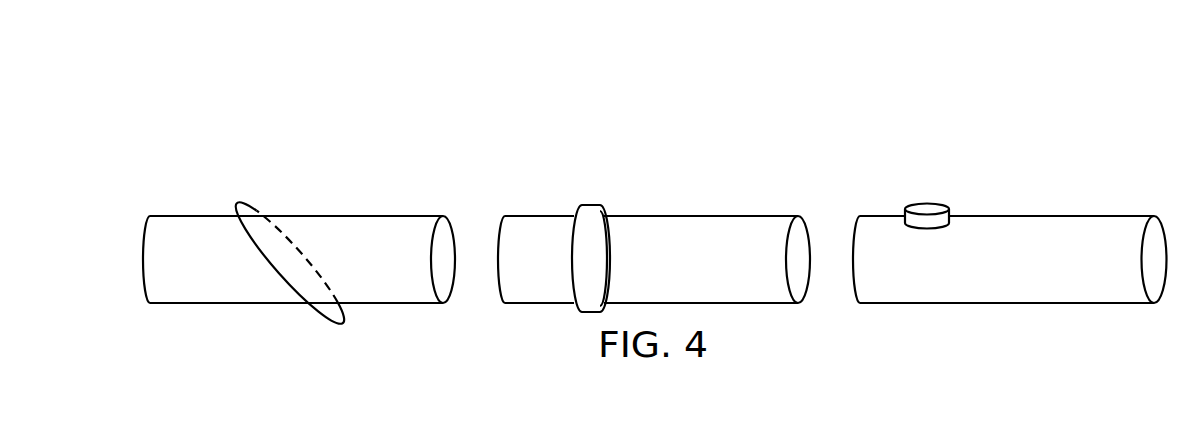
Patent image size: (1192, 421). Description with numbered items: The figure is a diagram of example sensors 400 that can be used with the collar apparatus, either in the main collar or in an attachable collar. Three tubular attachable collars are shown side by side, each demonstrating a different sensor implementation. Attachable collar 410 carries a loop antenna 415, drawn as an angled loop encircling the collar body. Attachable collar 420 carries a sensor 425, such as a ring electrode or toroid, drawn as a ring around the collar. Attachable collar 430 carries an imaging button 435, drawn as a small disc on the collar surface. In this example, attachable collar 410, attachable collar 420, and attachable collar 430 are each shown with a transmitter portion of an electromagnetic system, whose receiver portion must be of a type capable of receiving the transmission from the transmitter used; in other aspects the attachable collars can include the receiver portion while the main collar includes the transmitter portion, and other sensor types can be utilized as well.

The example sensors 400 is at (364, 60).
The attachable collar 410 is at (346, 215).
The loop antenna 415 is at (241, 203).
The attachable collar 420 is at (700, 216).
The sensor 425 is at (598, 205).
The attachable collar 430 is at (1057, 216).
The imaging button 435 is at (927, 203).